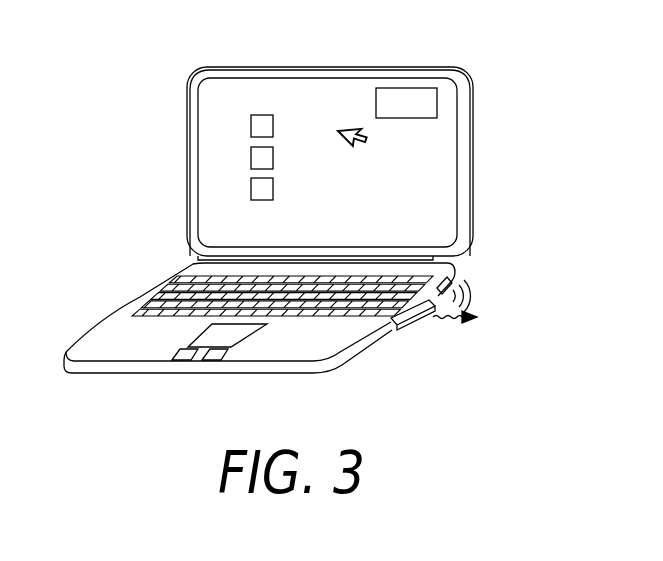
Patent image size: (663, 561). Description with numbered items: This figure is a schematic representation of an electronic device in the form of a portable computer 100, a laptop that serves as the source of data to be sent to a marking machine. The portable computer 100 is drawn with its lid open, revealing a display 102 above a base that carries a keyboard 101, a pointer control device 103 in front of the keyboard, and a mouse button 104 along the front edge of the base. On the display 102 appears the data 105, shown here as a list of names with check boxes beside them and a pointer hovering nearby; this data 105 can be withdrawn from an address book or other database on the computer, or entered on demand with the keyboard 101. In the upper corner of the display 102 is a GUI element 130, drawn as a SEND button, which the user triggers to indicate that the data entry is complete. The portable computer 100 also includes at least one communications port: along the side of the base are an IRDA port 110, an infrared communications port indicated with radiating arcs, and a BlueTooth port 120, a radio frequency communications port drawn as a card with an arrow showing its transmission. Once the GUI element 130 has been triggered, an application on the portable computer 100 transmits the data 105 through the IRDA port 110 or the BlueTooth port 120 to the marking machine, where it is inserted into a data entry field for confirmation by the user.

The portable computer 100 is at (166, 116).
The keyboard 101 is at (157, 298).
The display 102 is at (261, 74).
The pointer control device 103 is at (247, 332).
The mouse button 104 is at (180, 361).
The data 105 is at (298, 111).
The IRDA port 110 is at (455, 276).
The BlueTooth port 120 is at (408, 327).
The GUI element 130 is at (437, 103).